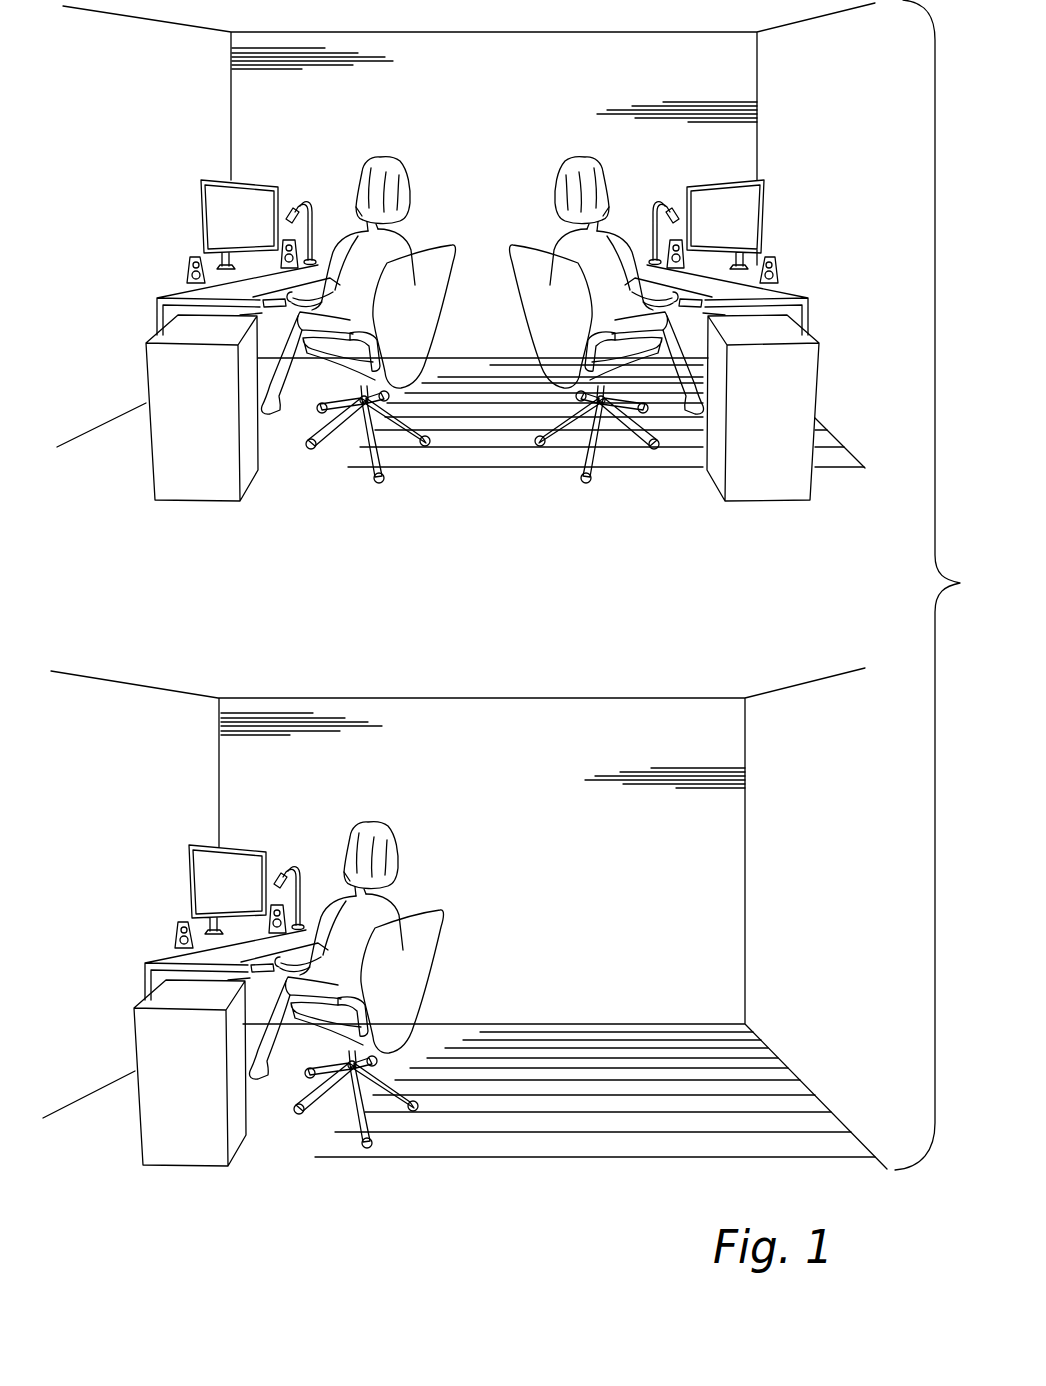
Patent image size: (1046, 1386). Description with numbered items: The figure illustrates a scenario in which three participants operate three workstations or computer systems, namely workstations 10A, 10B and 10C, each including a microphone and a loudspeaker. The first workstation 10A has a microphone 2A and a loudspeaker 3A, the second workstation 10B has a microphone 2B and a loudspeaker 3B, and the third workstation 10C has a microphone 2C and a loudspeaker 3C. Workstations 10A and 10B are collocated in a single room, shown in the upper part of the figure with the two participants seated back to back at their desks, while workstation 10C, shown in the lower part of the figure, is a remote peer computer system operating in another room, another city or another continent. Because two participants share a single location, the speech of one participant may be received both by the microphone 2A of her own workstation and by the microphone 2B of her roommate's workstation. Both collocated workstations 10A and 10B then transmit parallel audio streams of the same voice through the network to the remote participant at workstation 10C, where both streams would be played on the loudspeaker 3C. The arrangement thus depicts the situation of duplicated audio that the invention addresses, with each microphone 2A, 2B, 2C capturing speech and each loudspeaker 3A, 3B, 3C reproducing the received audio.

The workstation 10A is at (198, 183).
The microphone 2A is at (312, 207).
The loudspeaker 3A is at (187, 265).
The workstation 10B is at (767, 183).
The microphone 2B is at (653, 207).
The loudspeaker 3B is at (778, 265).
The workstation 10C is at (186, 848).
The microphone 2C is at (301, 872).
The loudspeaker 3C is at (177, 925).